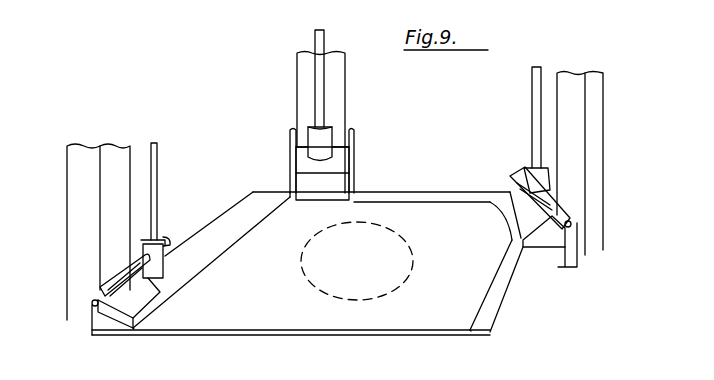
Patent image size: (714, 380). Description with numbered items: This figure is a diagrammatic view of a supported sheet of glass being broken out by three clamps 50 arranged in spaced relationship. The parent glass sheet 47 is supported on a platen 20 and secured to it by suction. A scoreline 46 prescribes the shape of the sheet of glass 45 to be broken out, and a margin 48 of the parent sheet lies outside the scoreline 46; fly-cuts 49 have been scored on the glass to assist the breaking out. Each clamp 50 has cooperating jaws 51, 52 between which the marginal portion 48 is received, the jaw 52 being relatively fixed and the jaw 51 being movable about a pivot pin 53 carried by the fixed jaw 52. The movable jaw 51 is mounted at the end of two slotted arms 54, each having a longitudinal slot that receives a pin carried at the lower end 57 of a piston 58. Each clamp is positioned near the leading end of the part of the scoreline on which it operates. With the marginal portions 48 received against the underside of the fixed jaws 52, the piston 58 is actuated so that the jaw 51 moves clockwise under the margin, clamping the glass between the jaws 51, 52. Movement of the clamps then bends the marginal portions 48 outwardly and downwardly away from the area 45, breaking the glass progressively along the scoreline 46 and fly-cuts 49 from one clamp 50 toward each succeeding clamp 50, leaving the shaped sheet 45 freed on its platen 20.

The platen 20 is at (342, 280).
The shaped sheet of glass 45 is at (388, 338).
The scoreline 46 is at (227, 242).
The parent glass sheet 47 is at (221, 313).
The margin 48 is at (513, 283).
The fly-cuts 49 is at (275, 192).
The clamp 50 is at (66, 205).
The movable jaw 51 is at (560, 263).
The fixed jaw 52 is at (115, 315).
The pivot pin 53 is at (95, 303).
The slotted arms 54 is at (100, 293).
The lower end of piston 57 is at (537, 174).
The piston 58 is at (157, 162).